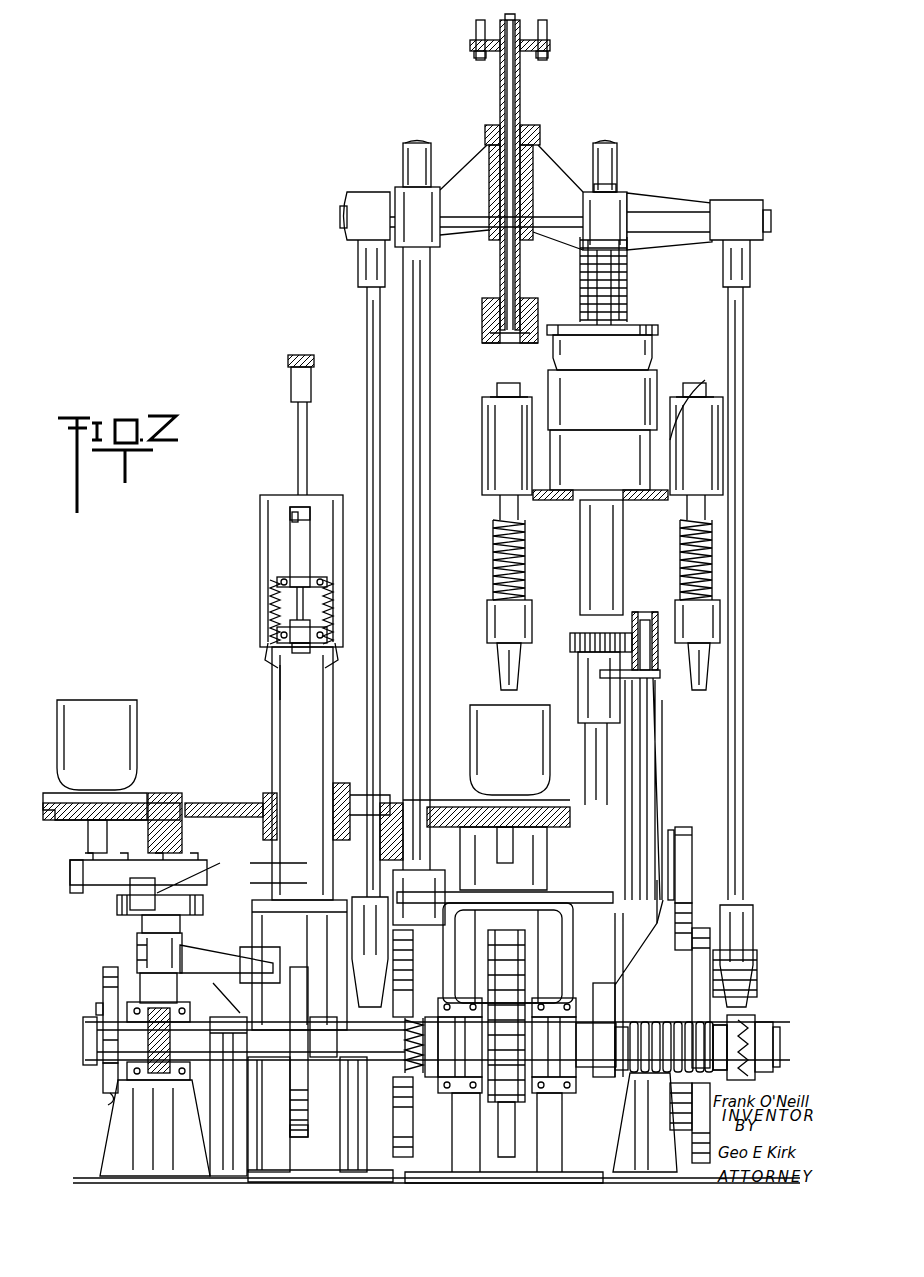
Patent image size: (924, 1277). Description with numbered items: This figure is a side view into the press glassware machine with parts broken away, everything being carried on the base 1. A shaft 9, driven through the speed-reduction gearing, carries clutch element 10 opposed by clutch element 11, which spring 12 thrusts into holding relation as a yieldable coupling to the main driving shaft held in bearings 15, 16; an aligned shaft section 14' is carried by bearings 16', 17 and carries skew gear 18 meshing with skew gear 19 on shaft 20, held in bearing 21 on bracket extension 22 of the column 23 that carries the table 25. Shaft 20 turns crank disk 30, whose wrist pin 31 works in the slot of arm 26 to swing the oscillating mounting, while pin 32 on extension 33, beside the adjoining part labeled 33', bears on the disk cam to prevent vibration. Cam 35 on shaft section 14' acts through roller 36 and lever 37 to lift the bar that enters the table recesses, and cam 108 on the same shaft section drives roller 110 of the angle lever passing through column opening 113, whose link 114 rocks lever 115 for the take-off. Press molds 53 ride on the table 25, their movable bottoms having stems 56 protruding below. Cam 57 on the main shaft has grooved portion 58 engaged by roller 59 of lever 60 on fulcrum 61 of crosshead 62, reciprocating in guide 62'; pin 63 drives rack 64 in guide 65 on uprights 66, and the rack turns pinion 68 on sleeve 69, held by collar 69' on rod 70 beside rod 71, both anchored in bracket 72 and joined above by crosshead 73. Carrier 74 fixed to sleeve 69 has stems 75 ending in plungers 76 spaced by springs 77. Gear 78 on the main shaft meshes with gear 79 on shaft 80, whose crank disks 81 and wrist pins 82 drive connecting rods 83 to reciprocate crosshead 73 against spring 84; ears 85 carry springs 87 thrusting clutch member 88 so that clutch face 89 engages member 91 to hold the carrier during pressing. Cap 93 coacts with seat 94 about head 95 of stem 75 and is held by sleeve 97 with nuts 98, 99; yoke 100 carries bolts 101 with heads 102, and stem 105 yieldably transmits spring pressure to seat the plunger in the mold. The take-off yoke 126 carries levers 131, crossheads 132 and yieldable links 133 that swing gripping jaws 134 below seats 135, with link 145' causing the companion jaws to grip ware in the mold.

The base 1 is at (75, 1177).
The shaft 9 is at (779, 1030).
The clutch element 10 is at (755, 1015).
The clutch element 11 is at (755, 1012).
The spring 12 is at (690, 1022).
The shaft section 14' is at (414, 1041).
The bearing 15 is at (577, 1080).
The bearing 16 is at (446, 1055).
The bearing 16' is at (320, 1119).
The bearing 17 is at (213, 1080).
The skew gear 18 is at (190, 1015).
The skew gear 19 is at (632, 1130).
The shaft 20 is at (180, 928).
The bearing 21 is at (137, 945).
The bracket extension 22 is at (240, 960).
The column 23 is at (252, 905).
The carrier or table 25 is at (235, 800).
The arm 26 is at (76, 893).
The crank disk 30 is at (140, 915).
The wrist pin 31 is at (130, 900).
The pin 32 is at (175, 880).
The extension 33 is at (141, 848).
The gear 33' is at (79, 1015).
The cam 35 is at (96, 1008).
The roller 36 is at (103, 1070).
The lever 37 is at (108, 1097).
The press molds 53 is at (470, 760).
The stems 56 is at (497, 845).
The cam 57 is at (600, 1112).
The grooved portion 58 is at (600, 983).
The roller 59 is at (613, 1047).
The lever 60 is at (665, 892).
The fulcrum 61 is at (692, 843).
The crosshead 62 is at (681, 789).
The guide 62' is at (669, 790).
The pin 63 is at (658, 678).
The rack 64 is at (642, 625).
The guide 65 is at (645, 612).
The uprights 66 is at (650, 755).
The pinion 68 is at (570, 648).
The upright sleeve 69 is at (600, 522).
The collar 69' is at (581, 687).
The rod 70 is at (585, 748).
The rod 71 is at (430, 633).
The bracket 72 is at (445, 925).
The crosshead or brace 73 is at (563, 175).
The carrier 74 is at (696, 400).
The depending stems 75 is at (680, 528).
The plungers 76 is at (710, 668).
The spring 77 is at (720, 560).
The eccentric pin-carrying gear 78 is at (505, 932).
The eccentric tooth gear 79 is at (498, 1140).
The shaft 80 is at (670, 1095).
The crank disk 81 is at (413, 985).
The wrist pins 82 is at (413, 1000).
The connecting rods 83 is at (743, 735).
The spring 84 is at (627, 300).
The ears 85 is at (627, 213).
The compression springs 87 is at (627, 268).
The clutch member 88 is at (658, 330).
The clutch face 89 is at (652, 366).
The member 91 is at (550, 385).
The cap 93 is at (482, 327).
The seat 94 is at (505, 830).
The head 95 is at (712, 392).
The sleeve 97 is at (522, 103).
The nut 98 is at (491, 240).
The nut 99 is at (485, 135).
The yoke 100 is at (552, 48).
The bolts 101 is at (547, 25).
The heads 102 is at (548, 56).
The stem 105 is at (500, 100).
The cam 108 is at (290, 1000).
The roller 110 is at (290, 1137).
The column opening 113 is at (405, 1060).
The link 114 is at (298, 468).
The lever 115 is at (288, 362).
The yoke 126 is at (296, 655).
The levers 131 is at (310, 510).
The crossheads 132 is at (290, 540).
The yieldable links 133 is at (323, 605).
The gripping jaws 134 is at (320, 665).
The seats 135 is at (275, 665).
The link 145' is at (250, 505).